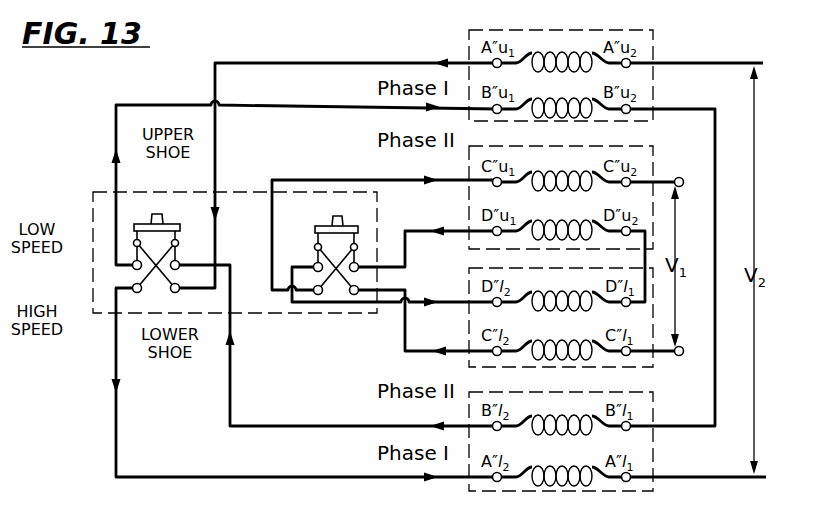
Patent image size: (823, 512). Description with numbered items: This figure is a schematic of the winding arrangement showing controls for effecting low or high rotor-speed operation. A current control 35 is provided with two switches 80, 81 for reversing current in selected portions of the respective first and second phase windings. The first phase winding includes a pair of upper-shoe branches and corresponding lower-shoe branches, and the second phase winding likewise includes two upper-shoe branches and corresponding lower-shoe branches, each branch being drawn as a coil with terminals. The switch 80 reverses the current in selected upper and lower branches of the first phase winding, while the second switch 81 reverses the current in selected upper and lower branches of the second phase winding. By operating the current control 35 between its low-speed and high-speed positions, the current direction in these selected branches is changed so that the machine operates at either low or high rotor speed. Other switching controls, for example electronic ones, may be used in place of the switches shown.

The current control 35 is at (90, 207).
The switch 80 is at (144, 210).
The second switch 81 is at (324, 212).